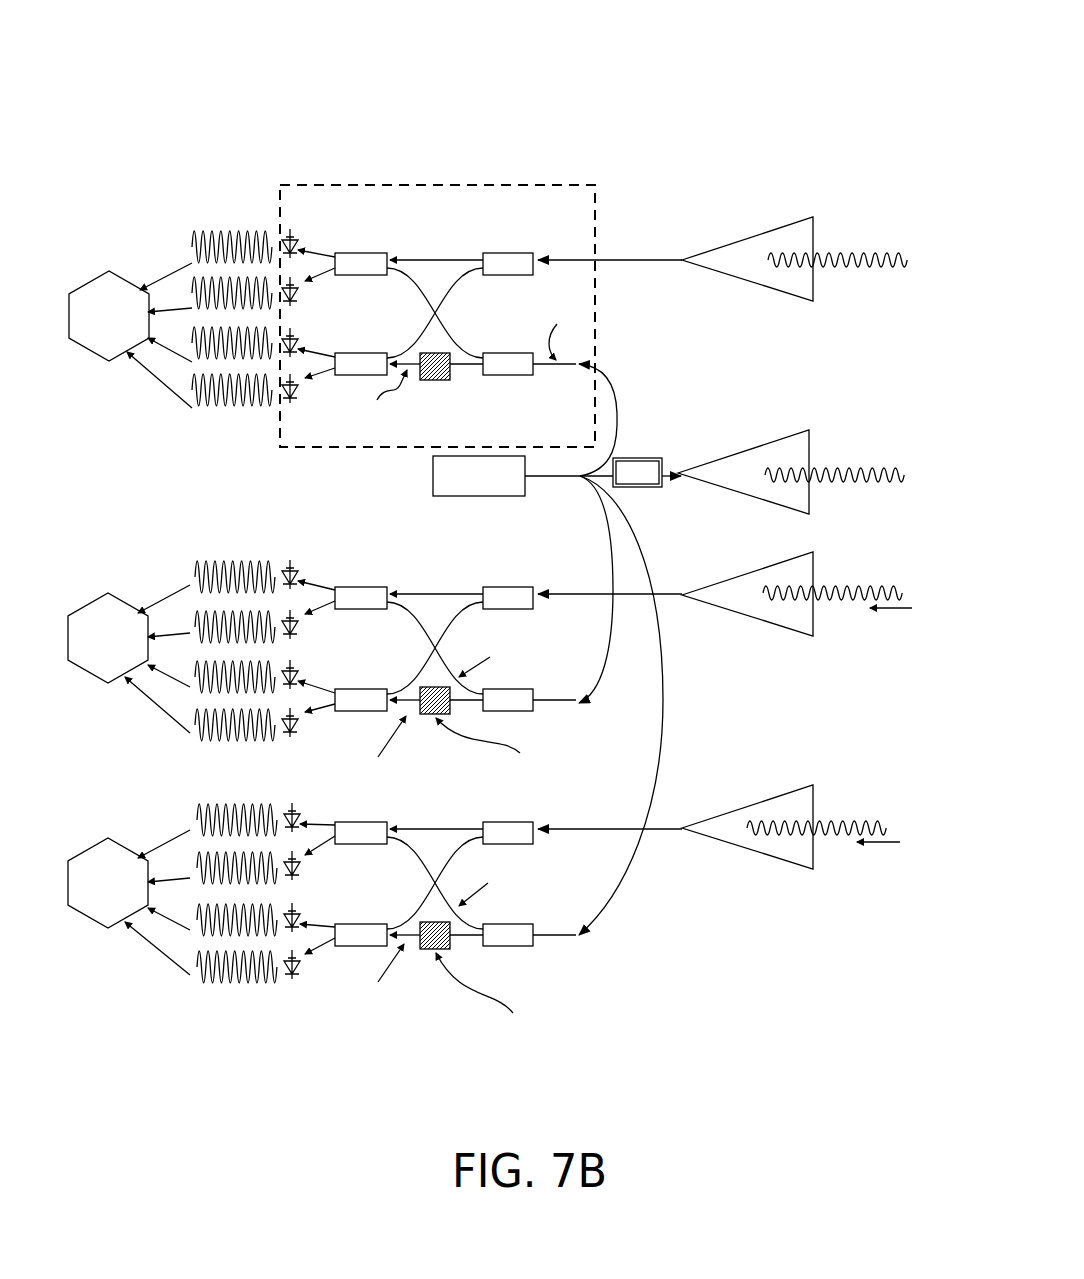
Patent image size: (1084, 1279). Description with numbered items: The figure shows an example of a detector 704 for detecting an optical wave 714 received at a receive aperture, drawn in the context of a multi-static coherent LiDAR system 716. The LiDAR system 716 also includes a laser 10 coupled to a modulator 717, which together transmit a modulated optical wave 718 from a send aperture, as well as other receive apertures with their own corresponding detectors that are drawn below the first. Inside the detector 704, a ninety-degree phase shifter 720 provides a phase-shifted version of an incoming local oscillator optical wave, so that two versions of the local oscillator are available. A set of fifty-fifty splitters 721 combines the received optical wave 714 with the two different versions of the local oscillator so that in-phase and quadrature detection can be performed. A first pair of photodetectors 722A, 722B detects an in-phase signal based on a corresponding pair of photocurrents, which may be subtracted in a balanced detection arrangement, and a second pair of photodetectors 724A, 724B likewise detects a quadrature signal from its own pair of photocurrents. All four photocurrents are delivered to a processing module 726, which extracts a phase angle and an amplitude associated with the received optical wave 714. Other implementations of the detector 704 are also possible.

The detector 704 is at (319, 261).
The LiDAR system 716 is at (641, 98).
The 50/50 splitters 721 is at (418, 226).
The 90-degree phase shifter 720 is at (439, 383).
The photodetector 722A is at (313, 241).
The photodetector 722B is at (313, 293).
The photodetector 724A is at (313, 340).
The photodetector 724B is at (313, 390).
The processing module 726 is at (109, 316).
The laser 10 is at (472, 496).
The modulator 717 is at (641, 457).
The optical wave 714 is at (900, 273).
The modulated optical wave 718 is at (875, 457).